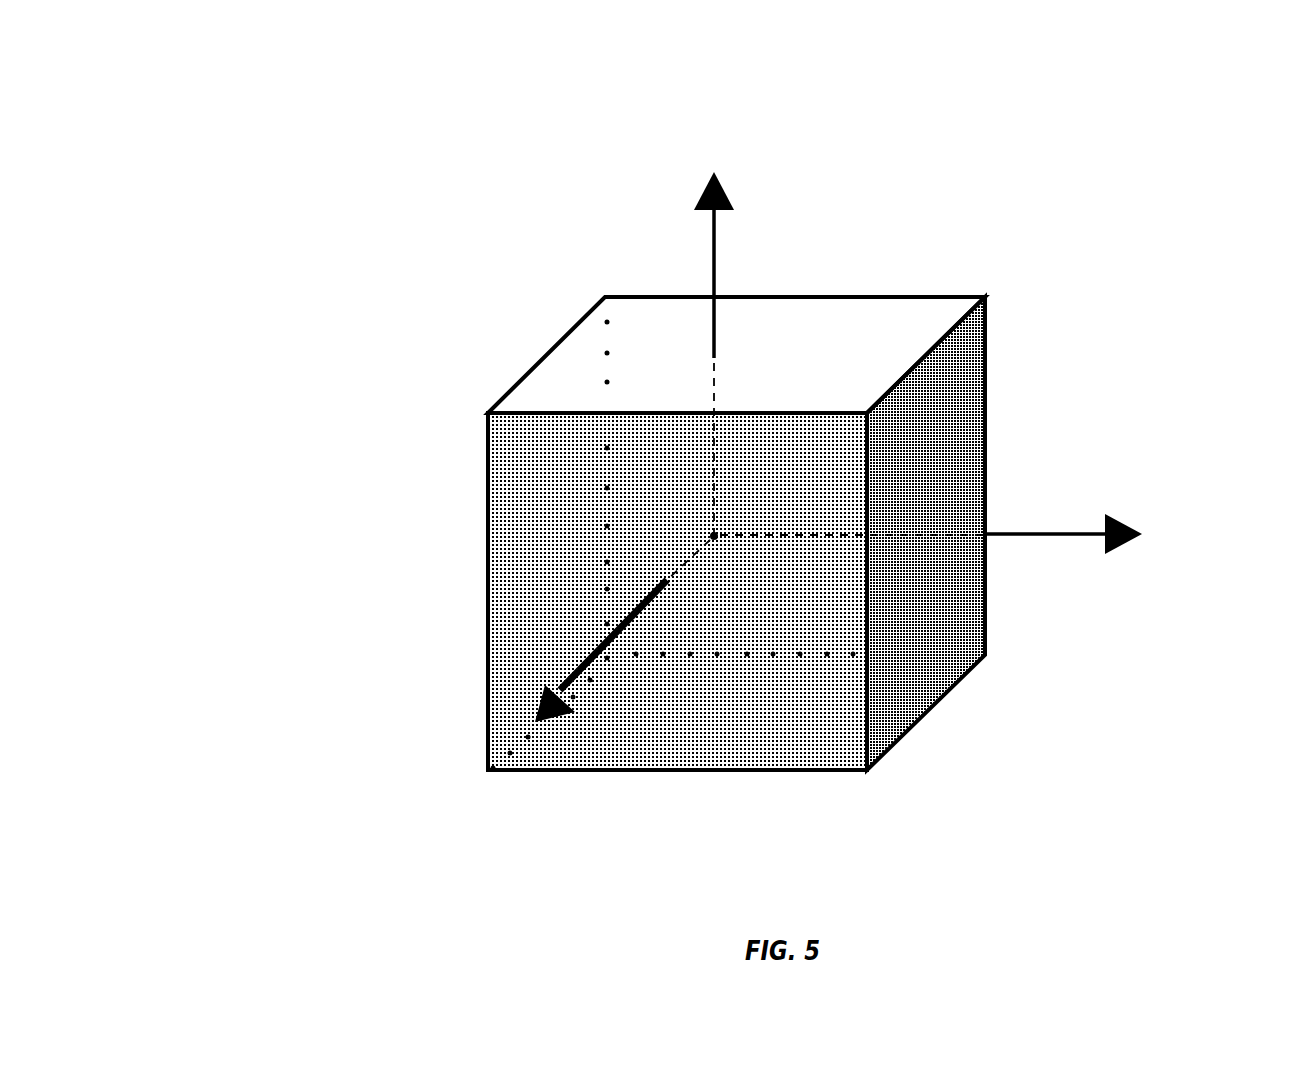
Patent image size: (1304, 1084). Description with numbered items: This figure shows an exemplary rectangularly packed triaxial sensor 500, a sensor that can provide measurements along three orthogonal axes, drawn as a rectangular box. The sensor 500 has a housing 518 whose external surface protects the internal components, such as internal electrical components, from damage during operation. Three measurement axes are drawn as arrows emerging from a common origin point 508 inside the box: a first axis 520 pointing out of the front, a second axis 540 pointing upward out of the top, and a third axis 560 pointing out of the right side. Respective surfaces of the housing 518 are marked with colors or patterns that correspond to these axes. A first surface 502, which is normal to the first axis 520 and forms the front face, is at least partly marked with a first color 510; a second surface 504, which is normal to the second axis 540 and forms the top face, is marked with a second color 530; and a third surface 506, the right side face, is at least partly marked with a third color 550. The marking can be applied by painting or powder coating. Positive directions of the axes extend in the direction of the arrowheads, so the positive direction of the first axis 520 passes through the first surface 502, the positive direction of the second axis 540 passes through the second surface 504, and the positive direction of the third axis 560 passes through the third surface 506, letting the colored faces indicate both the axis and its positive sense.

The rectangularly packed triaxial sensor 500 is at (275, 120).
The first surface 502 is at (551, 464).
The second surface 504 is at (932, 331).
The third surface 506 is at (918, 449).
The center point 508 is at (718, 539).
The first color 510 is at (497, 480).
The housing 518 is at (632, 530).
The first axis 520 is at (568, 665).
The second color 530 is at (863, 298).
The second axis 540 is at (589, 344).
The third color 550 is at (984, 433).
The third axis 560 is at (1066, 542).